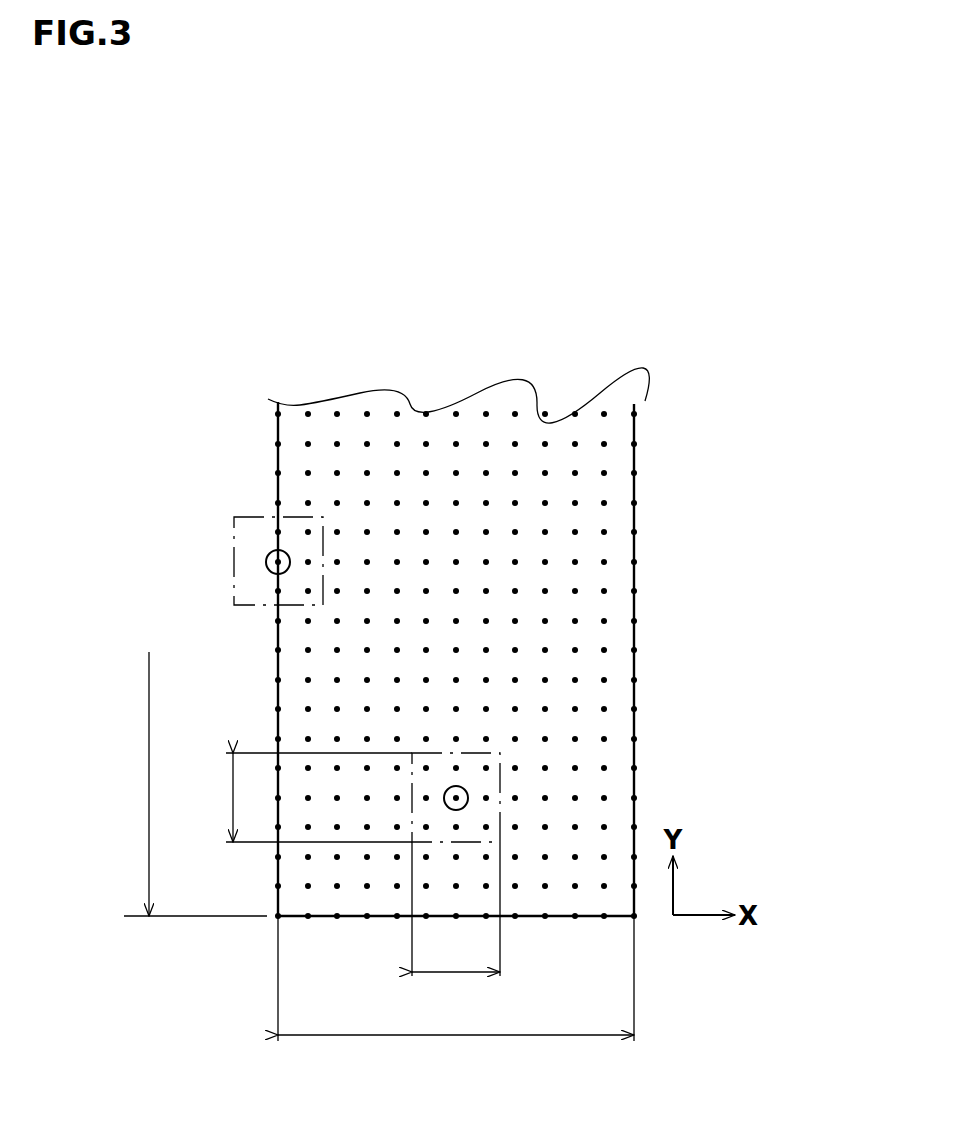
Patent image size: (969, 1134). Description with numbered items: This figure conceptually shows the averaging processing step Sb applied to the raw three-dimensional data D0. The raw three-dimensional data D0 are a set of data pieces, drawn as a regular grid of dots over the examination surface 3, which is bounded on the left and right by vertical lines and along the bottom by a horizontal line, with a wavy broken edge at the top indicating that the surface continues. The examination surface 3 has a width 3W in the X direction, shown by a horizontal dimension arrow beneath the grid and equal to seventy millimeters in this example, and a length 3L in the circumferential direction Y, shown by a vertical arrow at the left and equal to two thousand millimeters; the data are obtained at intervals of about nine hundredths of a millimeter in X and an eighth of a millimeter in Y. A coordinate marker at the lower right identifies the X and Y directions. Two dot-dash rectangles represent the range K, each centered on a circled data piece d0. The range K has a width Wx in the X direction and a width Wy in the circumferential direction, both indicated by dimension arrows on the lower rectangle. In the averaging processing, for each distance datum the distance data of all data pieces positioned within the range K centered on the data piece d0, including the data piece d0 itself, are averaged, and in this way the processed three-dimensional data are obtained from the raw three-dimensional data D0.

The examination surface 3 is at (412, 404).
The range K is at (256, 517).
The data piece d0 is at (271, 558).
The raw three-dimensional data D0 is at (687, 437).
The averaging processing step Sb is at (716, 495).
The length of the examination surface 3L is at (195, 768).
The width of the examination surface 3W is at (456, 994).
The width of range K in the X direction Wx is at (456, 925).
The width of range K in the circumferential direction Wy is at (295, 797).